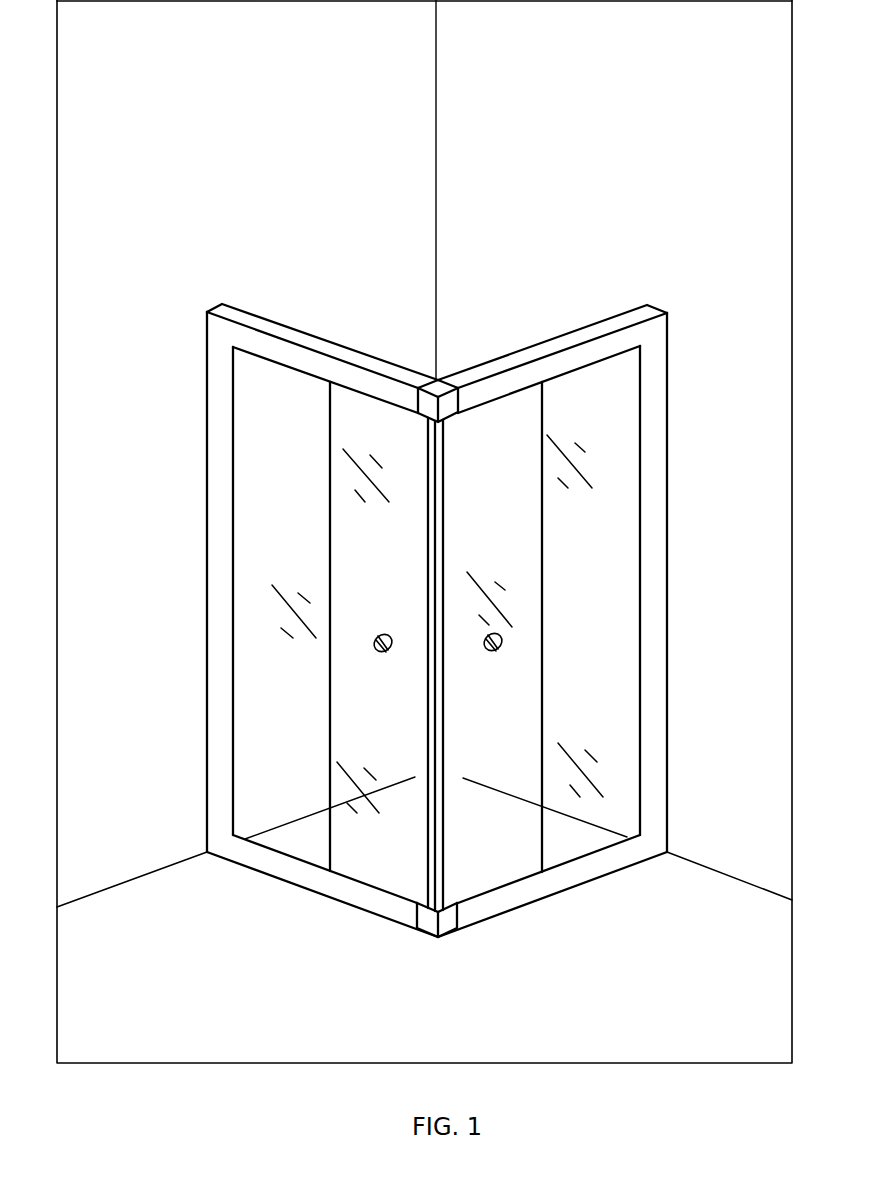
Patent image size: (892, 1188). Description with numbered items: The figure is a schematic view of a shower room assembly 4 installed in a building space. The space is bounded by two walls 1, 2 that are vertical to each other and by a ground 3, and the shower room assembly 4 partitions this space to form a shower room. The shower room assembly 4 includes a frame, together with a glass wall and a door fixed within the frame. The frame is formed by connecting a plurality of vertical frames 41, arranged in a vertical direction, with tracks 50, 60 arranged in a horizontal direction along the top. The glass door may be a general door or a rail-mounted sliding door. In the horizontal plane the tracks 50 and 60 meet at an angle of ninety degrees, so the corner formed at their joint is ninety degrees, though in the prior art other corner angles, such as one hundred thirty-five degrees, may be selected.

The wall 1 is at (657, 140).
The wall 2 is at (248, 212).
The ground 3 is at (366, 998).
The shower room assembly 4 is at (555, 572).
The vertical frame 41 is at (225, 544).
The track 50 is at (343, 358).
The track 60 is at (552, 352).